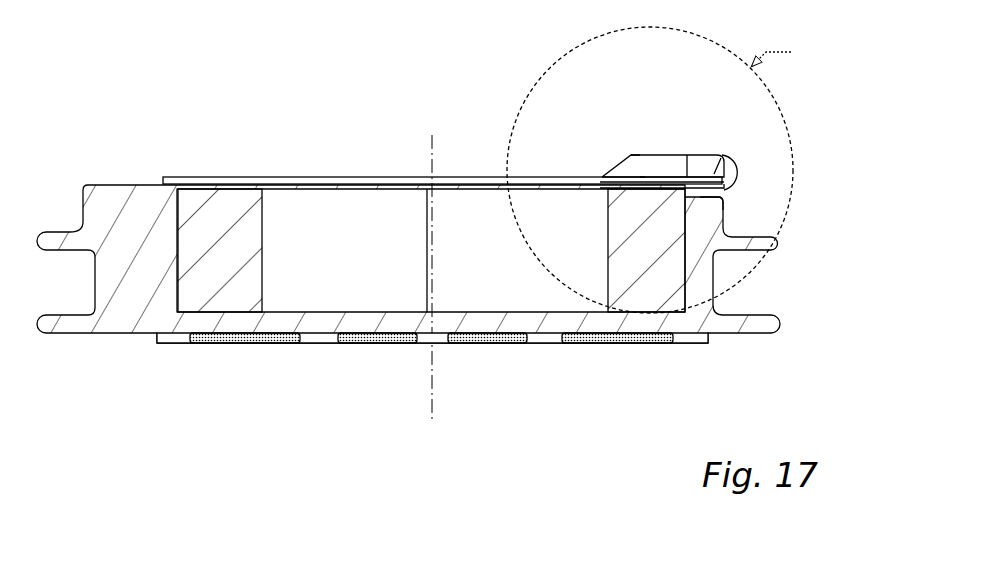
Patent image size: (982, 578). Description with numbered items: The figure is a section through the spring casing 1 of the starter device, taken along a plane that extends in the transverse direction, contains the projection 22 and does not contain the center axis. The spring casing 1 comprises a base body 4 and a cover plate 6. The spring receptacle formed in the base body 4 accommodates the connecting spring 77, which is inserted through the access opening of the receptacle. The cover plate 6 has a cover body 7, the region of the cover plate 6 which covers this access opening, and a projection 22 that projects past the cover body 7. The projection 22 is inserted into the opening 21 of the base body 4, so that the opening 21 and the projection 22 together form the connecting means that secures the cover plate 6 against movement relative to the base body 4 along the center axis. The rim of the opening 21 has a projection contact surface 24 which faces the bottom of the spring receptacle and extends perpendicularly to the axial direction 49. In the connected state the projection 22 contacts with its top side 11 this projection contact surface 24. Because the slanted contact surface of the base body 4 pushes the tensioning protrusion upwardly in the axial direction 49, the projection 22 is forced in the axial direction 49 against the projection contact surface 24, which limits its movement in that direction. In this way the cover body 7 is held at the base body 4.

The spring casing 1 is at (147, 70).
The base body 4 is at (718, 259).
The cover plate 6 is at (398, 173).
The cover body 7 is at (580, 180).
The top side 11 is at (668, 160).
The opening 21 is at (729, 198).
The projection 22 is at (637, 177).
The projection contact surface 24 is at (722, 152).
The axial direction 49 is at (446, 46).
The connecting spring 77 is at (654, 283).